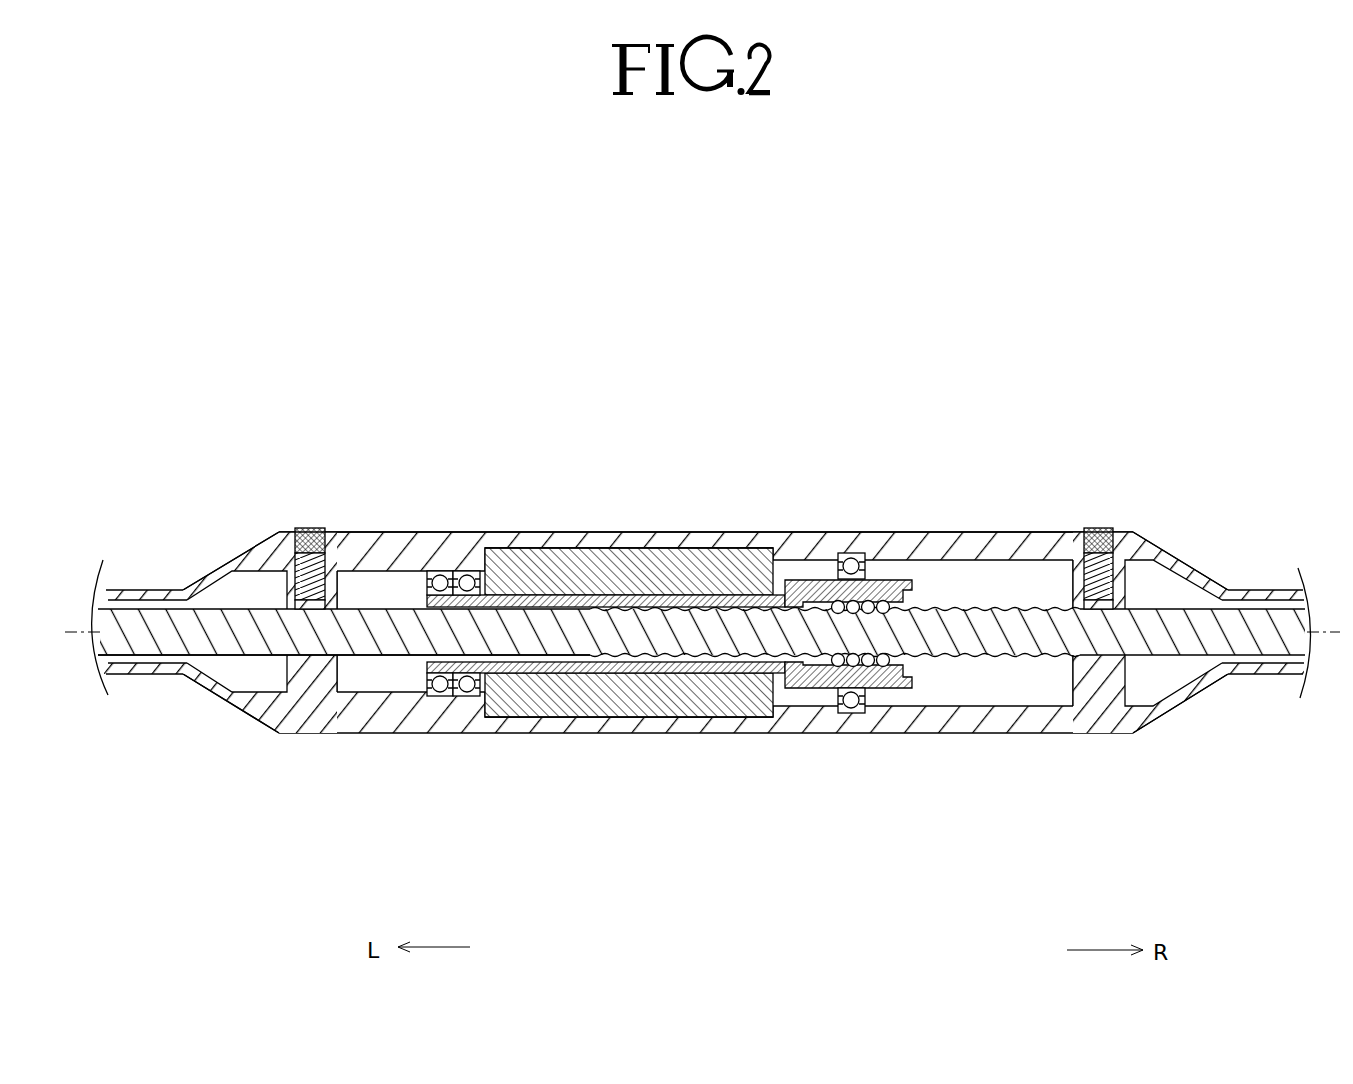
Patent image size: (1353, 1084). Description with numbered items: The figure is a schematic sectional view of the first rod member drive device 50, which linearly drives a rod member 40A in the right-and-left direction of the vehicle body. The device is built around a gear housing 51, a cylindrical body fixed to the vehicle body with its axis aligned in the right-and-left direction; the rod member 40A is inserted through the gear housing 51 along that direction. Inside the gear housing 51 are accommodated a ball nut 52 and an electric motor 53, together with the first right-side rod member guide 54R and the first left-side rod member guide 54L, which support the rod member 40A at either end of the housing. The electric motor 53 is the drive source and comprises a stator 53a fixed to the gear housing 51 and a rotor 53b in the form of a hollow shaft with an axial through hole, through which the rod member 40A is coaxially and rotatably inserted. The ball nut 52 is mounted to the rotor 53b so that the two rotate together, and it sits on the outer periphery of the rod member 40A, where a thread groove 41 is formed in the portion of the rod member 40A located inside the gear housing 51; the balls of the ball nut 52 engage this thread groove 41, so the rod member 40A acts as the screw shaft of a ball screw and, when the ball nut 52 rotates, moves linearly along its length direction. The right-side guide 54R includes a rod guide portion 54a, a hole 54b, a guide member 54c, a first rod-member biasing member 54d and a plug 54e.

The rod member 40A is at (392, 655).
The thread groove 41 is at (983, 609).
The rod member drive device 50 is at (1061, 343).
The gear housing 51 is at (950, 532).
The ball nut 52 is at (882, 580).
The electric motor 53 is at (664, 513).
The stator 53a is at (563, 548).
The rotor 53b is at (510, 595).
The first left-side rod member guide 54L is at (297, 452).
The first right-side rod member guide 54R is at (1121, 461).
The rod guide portion 54a is at (311, 680).
The hole 54b is at (275, 535).
The guide member 54c is at (273, 568).
The first rod-member biasing member 54d is at (345, 535).
The plug 54e is at (313, 527).